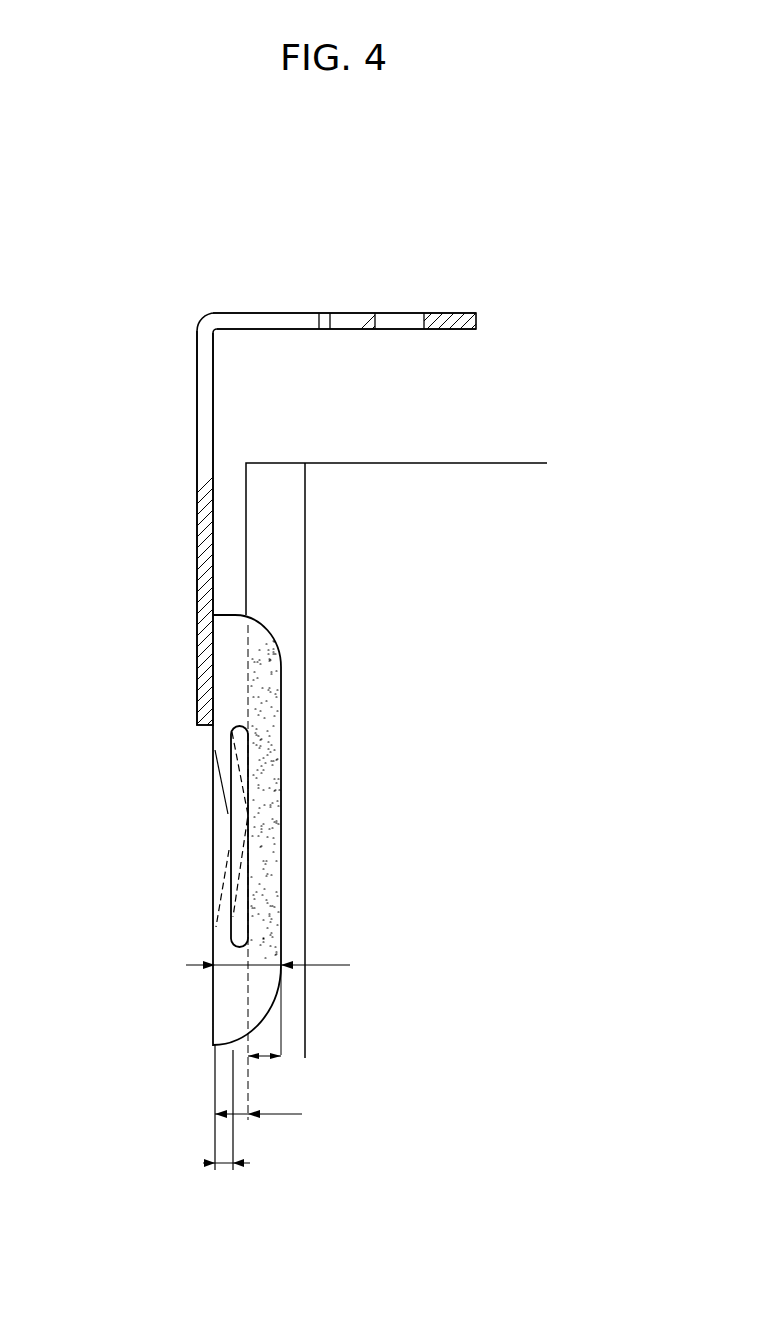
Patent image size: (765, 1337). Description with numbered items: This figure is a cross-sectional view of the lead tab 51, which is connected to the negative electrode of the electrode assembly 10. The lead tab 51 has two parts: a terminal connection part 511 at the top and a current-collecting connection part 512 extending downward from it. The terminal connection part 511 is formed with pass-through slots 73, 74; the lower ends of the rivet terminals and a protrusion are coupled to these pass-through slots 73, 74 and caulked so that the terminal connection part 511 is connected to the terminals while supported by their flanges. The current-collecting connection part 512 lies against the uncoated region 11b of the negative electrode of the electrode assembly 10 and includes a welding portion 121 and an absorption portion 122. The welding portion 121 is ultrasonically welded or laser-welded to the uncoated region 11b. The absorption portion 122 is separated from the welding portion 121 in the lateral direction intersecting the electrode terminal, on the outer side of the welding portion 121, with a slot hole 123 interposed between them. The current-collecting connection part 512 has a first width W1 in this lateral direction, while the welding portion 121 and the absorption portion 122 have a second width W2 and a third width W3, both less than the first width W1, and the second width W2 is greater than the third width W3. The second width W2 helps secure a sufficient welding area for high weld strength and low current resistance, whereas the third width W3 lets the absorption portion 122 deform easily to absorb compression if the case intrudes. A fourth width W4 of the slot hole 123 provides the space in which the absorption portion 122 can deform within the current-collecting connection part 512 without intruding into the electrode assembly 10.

The lead tab 51 is at (339, 186).
The terminal connection part 511 is at (283, 312).
The current-collecting connection part 512 is at (168, 739).
The pass-through slot 73 is at (397, 322).
The pass-through slot 74 is at (324, 330).
The electrode assembly 10 is at (487, 487).
The uncoated region 11b is at (280, 546).
The welding portion 121 is at (268, 710).
The absorption portion 122 is at (222, 812).
The slot hole 123 is at (240, 864).
The first width W1 is at (268, 953).
The second width W2 is at (265, 1073).
The third width W3 is at (226, 1179).
The fourth width W4 is at (258, 1107).